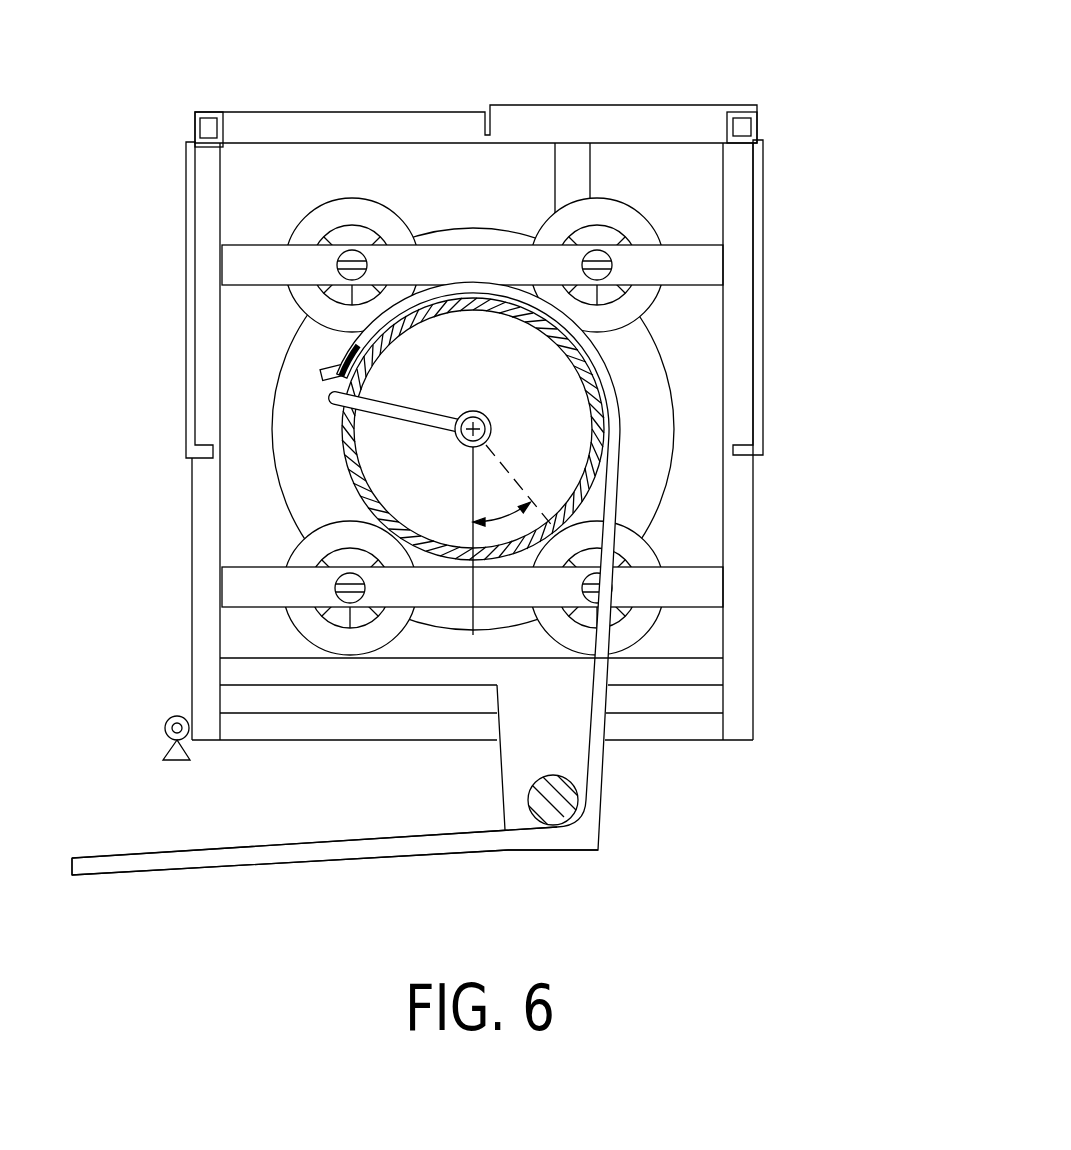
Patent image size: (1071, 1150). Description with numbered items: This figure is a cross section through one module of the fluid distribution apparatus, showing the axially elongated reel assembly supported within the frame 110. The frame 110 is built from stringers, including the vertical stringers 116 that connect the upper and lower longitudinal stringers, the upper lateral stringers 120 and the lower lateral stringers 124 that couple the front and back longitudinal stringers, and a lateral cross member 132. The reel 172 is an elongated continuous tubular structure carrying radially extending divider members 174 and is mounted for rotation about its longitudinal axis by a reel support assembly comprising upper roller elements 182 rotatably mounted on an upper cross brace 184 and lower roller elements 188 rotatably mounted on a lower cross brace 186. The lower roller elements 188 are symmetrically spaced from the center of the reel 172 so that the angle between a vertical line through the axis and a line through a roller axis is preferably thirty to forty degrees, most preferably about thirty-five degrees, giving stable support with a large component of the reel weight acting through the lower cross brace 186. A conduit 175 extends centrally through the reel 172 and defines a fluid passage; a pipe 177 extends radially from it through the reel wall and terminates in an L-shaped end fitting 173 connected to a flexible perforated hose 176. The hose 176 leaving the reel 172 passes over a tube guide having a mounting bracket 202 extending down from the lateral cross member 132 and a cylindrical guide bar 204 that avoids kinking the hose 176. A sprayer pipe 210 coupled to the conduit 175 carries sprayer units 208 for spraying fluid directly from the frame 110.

The frame 110 is at (768, 98).
The vertical stringers 116 is at (200, 545).
The upper lateral stringers 120 is at (400, 120).
The lower lateral stringers 124 is at (680, 743).
The lateral cross member 132 is at (360, 687).
The reel 172 is at (335, 468).
The L-shaped end fitting 173 is at (327, 390).
The divider members 174 is at (673, 467).
The conduit 175 is at (493, 413).
The flexible tubes 176 is at (366, 860).
The pipe 177 is at (420, 408).
The upper roller elements 182 is at (378, 201).
The upper cross brace 184 is at (700, 245).
The lower cross brace 186 is at (695, 567).
The lower roller elements 188 is at (300, 637).
The mounting bracket 202 is at (598, 850).
The guide bar 204 is at (527, 805).
The sprayer units 208 is at (172, 757).
The pipe 210 is at (168, 718).